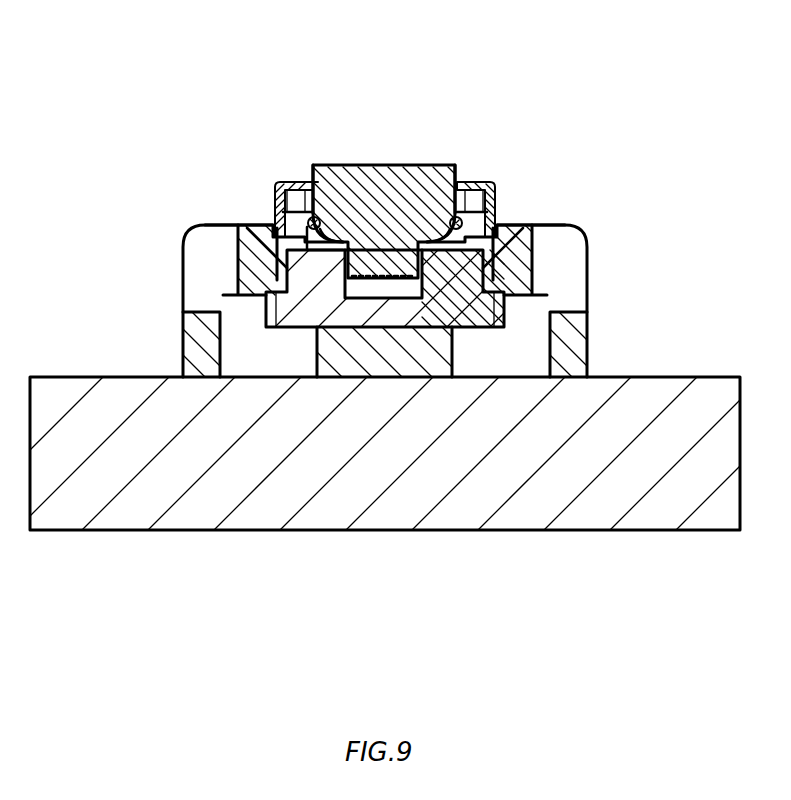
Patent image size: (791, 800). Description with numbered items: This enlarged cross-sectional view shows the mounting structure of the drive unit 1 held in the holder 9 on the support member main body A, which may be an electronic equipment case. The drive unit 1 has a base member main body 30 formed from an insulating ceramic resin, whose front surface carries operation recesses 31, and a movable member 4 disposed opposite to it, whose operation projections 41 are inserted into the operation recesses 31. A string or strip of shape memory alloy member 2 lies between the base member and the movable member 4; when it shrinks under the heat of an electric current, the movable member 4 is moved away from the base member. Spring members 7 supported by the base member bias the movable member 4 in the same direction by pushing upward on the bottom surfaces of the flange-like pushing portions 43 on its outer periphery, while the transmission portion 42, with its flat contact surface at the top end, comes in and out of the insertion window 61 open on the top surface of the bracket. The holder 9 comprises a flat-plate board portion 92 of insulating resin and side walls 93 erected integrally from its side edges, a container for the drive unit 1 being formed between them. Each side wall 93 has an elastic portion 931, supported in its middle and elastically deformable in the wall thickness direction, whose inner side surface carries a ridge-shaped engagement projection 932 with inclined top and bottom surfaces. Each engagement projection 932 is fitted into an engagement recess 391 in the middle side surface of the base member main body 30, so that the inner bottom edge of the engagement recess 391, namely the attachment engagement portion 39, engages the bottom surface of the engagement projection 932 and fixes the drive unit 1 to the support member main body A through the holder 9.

The drive unit 1 is at (483, 175).
The shape memory alloy member 2 is at (400, 258).
The movable member 4 is at (386, 150).
The spring member 7 is at (315, 216).
The holder 9 is at (590, 345).
The base member main body 30 is at (302, 313).
The operation recess 31 is at (363, 292).
The attachment engagement portion 39 is at (285, 278).
The operation projection 41 is at (450, 270).
The transmission portion 42 is at (362, 172).
The pushing portion 43 is at (468, 180).
The insertion window 61 is at (311, 216).
The board portion 92 is at (398, 282).
The side wall 93 is at (197, 226).
The engagement recess 391 is at (283, 262).
The elastic portion 931 is at (238, 240).
The engagement projection 932 is at (280, 186).
The support member main body A is at (688, 515).